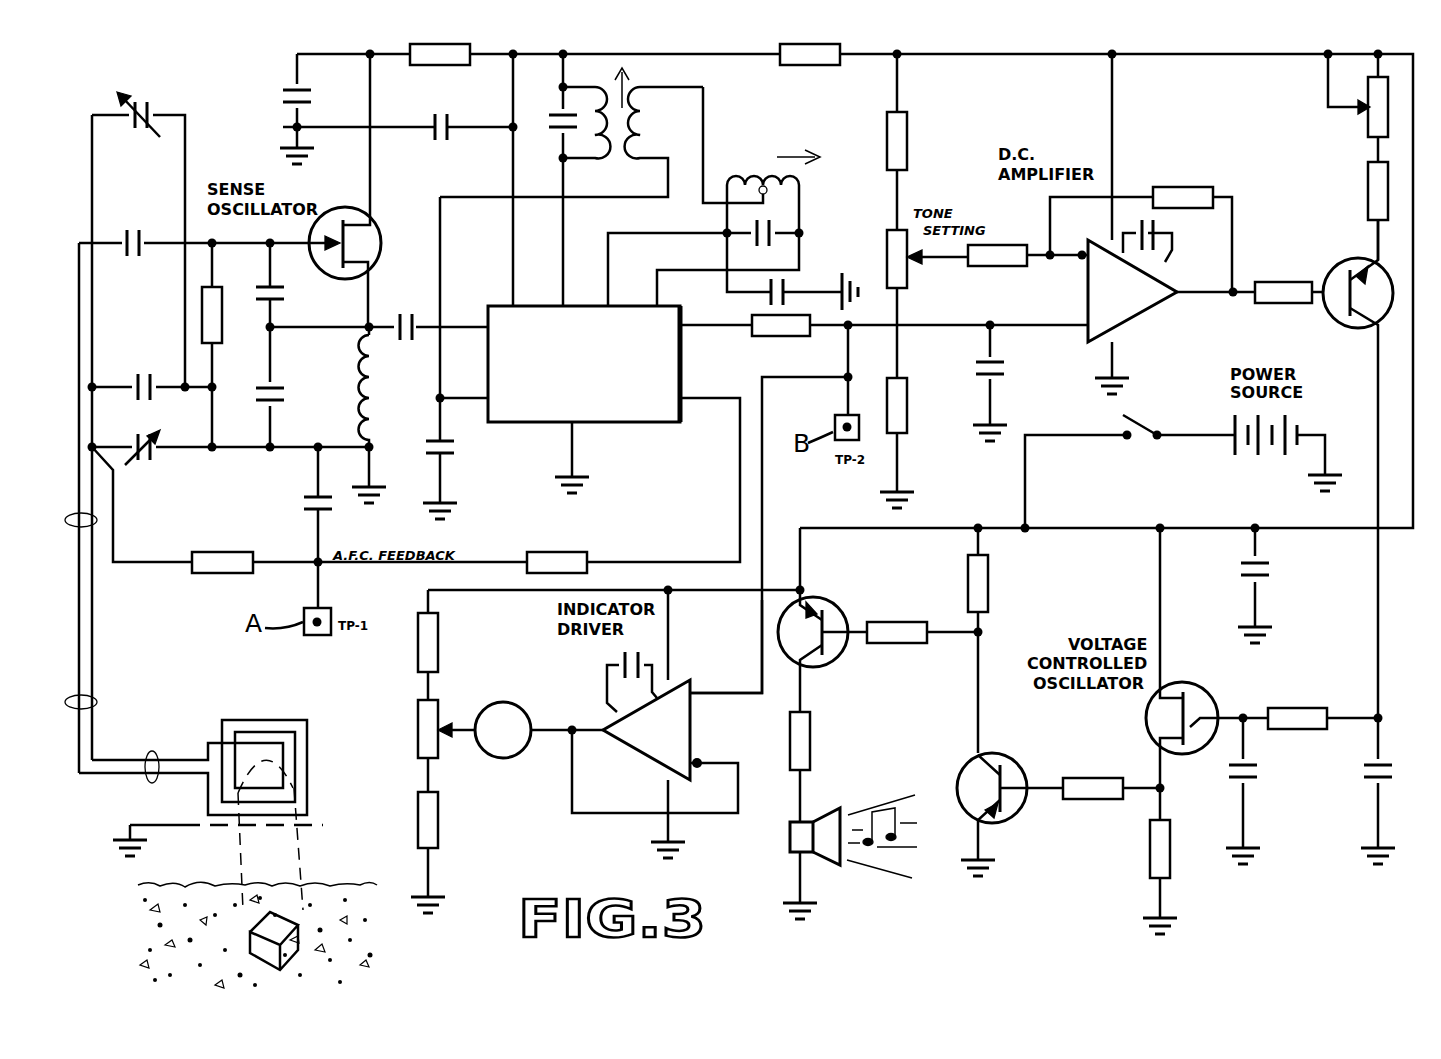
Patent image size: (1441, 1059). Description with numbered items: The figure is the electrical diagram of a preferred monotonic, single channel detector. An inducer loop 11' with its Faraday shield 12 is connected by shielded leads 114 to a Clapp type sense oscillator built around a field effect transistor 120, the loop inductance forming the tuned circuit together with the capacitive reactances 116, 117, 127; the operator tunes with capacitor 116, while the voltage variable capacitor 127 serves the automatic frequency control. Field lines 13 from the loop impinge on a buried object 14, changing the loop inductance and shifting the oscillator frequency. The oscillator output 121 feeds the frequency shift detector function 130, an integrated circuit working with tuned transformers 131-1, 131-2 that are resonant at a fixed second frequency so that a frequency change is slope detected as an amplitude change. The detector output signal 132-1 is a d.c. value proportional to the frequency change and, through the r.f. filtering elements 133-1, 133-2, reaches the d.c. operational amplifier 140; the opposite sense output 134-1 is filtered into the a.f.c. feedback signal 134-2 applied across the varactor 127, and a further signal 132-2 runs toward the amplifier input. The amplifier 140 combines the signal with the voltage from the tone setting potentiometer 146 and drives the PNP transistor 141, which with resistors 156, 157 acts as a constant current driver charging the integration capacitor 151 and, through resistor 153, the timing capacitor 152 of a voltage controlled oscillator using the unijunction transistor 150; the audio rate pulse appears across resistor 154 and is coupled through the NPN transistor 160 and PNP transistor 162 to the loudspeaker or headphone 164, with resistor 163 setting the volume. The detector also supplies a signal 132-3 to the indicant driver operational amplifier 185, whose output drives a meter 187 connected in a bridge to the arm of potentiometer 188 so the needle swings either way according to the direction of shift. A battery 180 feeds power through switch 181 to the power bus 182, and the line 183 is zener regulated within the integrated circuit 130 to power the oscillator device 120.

The inducer loop 11' is at (223, 754).
The Faraday shield 12 is at (190, 823).
The field lines 13 is at (303, 875).
The object 14 is at (255, 940).
The shielded leads 114 is at (100, 705).
The capacitor 116 is at (116, 92).
The capacitive reactance 117 is at (135, 385).
The field effect transistor 120 is at (377, 228).
The oscillator output 121 is at (453, 325).
The voltage variable capacitor 127 is at (168, 455).
The frequency shift detector function 130 is at (608, 412).
The tuned transformer 131-1 is at (628, 88).
The tuned transformer 131-2 is at (743, 173).
The detector output signal 132-1 is at (713, 330).
The conductor 132-2 is at (1050, 330).
The signal 132-3 is at (740, 693).
The r.f. filtering element 133-1 is at (783, 335).
The r.f. filtering element 133-2 is at (973, 373).
The output 134-1 is at (690, 562).
The a.f.c. feedback signal 134-2 is at (487, 562).
The d.c. operational amplifier 140 is at (1140, 300).
The PNP transistor 141 is at (1350, 272).
The tone setting potentiometer 146 is at (897, 275).
The unijunction transistor 150 is at (1210, 705).
The integration capacitor 151 is at (1393, 767).
The timing capacitor 152 is at (1258, 775).
The resistor 153 is at (1307, 716).
The resistor 154 is at (1152, 862).
The resistor 156 is at (1362, 95).
The resistor 157 is at (1373, 195).
The NPN transistor 160 is at (1015, 775).
The PNP transistor 162 is at (825, 615).
The resistor 163 is at (798, 747).
The loudspeaker or headphone 164 is at (793, 848).
The battery 180 is at (1277, 455).
The switch 181 is at (1153, 428).
The power bus 182 is at (1192, 54).
The line 183 is at (590, 54).
The indicant driver operational amplifier 185 is at (680, 692).
The meter 187 is at (495, 758).
The potentiometer 188 is at (427, 742).